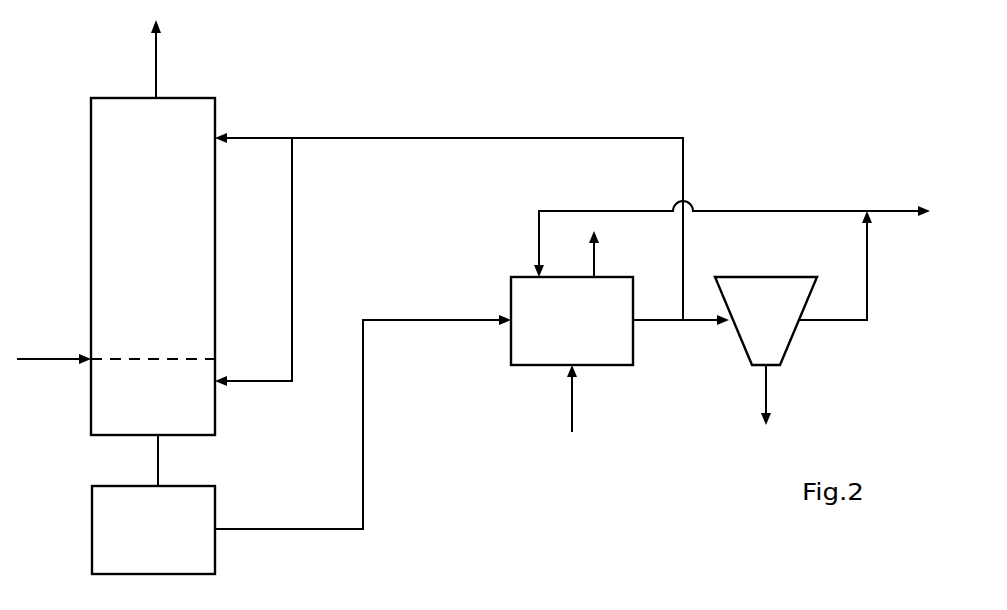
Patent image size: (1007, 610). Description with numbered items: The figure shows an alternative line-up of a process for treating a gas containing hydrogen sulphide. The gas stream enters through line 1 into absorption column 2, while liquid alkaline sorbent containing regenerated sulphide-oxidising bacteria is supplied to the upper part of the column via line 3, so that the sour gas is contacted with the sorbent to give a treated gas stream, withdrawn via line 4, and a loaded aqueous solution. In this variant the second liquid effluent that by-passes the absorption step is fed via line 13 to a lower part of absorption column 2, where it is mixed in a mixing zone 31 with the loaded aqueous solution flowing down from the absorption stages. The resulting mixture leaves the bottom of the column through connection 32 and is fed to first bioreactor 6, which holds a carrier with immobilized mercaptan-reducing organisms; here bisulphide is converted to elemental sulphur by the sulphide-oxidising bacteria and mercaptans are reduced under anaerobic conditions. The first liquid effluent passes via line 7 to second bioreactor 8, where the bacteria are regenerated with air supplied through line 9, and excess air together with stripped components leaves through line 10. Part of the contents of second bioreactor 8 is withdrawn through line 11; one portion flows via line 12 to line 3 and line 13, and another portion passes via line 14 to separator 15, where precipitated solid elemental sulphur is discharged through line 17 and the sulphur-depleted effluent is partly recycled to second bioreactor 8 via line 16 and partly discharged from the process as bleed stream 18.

The line 1 is at (52, 357).
The absorption column 2 is at (149, 331).
The mixing zone 31 is at (144, 401).
The connecting line 32 is at (158, 462).
The line 3 is at (275, 136).
The line 4 is at (157, 48).
The first bioreactor 6 is at (149, 542).
The line 7 is at (470, 322).
The second bioreactor 8 is at (562, 333).
The line 9 is at (573, 400).
The line 10 is at (596, 248).
The outlet line 11 is at (652, 322).
The line 12 is at (495, 136).
The line 13 is at (292, 198).
The compressor feed line 14 is at (707, 322).
The separator 15 is at (752, 333).
The line 16 is at (785, 208).
The line 17 is at (768, 397).
The bleed stream 18 is at (890, 208).